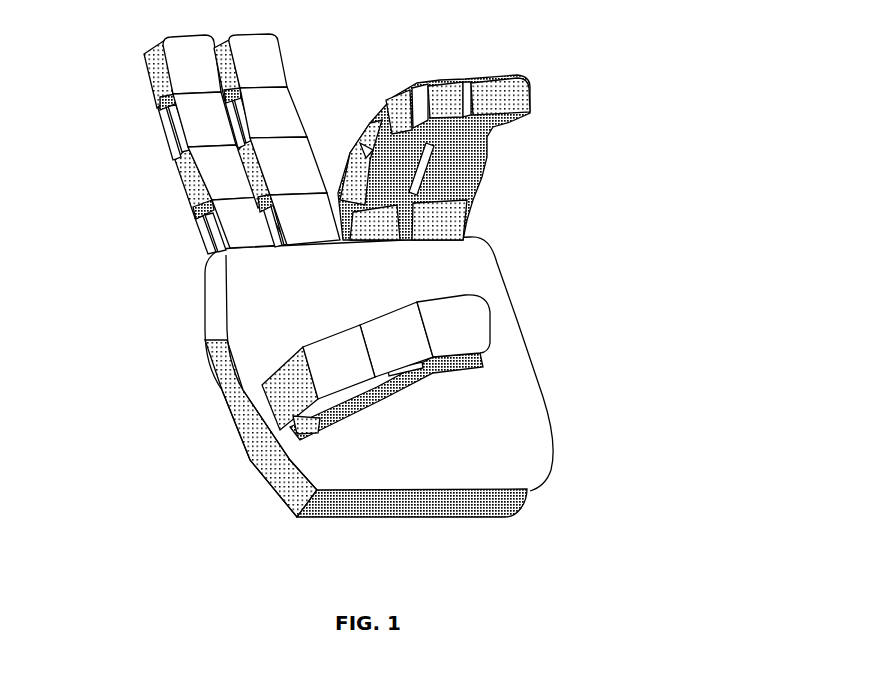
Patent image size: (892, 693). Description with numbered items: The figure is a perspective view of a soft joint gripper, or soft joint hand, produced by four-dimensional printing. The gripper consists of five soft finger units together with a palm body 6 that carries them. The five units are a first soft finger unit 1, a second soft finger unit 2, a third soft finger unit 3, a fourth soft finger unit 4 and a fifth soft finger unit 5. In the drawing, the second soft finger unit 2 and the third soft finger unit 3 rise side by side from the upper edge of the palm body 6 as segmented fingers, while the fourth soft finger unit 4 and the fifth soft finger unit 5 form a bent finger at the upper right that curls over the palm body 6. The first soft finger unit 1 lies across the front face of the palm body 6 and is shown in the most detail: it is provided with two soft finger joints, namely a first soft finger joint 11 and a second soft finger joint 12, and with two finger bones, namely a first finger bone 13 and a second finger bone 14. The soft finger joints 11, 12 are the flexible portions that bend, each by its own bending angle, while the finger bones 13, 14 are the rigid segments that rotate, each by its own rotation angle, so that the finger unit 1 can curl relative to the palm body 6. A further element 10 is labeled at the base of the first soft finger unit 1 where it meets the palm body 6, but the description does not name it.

The first soft finger unit 1 is at (371, 403).
The second soft finger unit 2 is at (185, 178).
The third soft finger unit 3 is at (287, 117).
The fourth soft finger unit 4 is at (395, 183).
The fifth soft finger unit 5 is at (468, 170).
The palm body 6 is at (463, 410).
The hinge shaft 10 is at (312, 425).
The first soft finger joint 11 is at (292, 400).
The second soft finger joint 12 is at (402, 340).
The first finger bone 13 is at (333, 358).
The second finger bone 14 is at (467, 325).